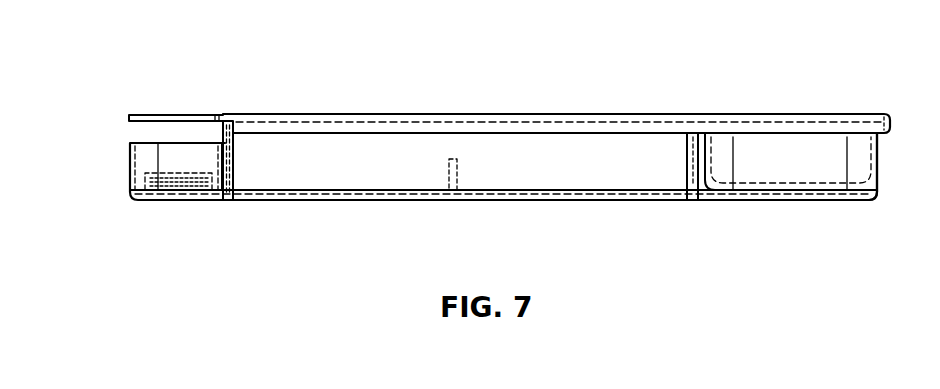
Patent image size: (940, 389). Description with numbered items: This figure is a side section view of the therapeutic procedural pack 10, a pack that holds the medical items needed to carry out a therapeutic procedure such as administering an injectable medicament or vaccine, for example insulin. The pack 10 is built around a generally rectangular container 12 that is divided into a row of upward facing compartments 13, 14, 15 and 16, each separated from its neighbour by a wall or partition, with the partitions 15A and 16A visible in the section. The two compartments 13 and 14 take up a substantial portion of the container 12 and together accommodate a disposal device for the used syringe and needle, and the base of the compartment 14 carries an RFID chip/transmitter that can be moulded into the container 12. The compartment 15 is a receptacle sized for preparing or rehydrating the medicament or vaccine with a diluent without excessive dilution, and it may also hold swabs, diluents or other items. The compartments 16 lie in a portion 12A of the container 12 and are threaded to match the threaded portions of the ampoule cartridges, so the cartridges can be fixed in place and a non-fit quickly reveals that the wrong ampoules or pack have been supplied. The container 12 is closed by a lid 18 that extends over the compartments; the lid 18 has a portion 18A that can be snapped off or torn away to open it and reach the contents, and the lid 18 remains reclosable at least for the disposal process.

The therapeutic procedural pack 10 is at (725, 115).
The container 12 is at (878, 148).
The portion of the container 12A is at (130, 170).
The compartment 13 is at (372, 165).
The compartment 14 is at (573, 160).
The compartment 15 is at (790, 155).
The partition 15A is at (697, 157).
The compartment 16 is at (197, 180).
The partition 16A is at (224, 163).
The lid 18 is at (547, 115).
The portion of the lid 18A is at (208, 115).